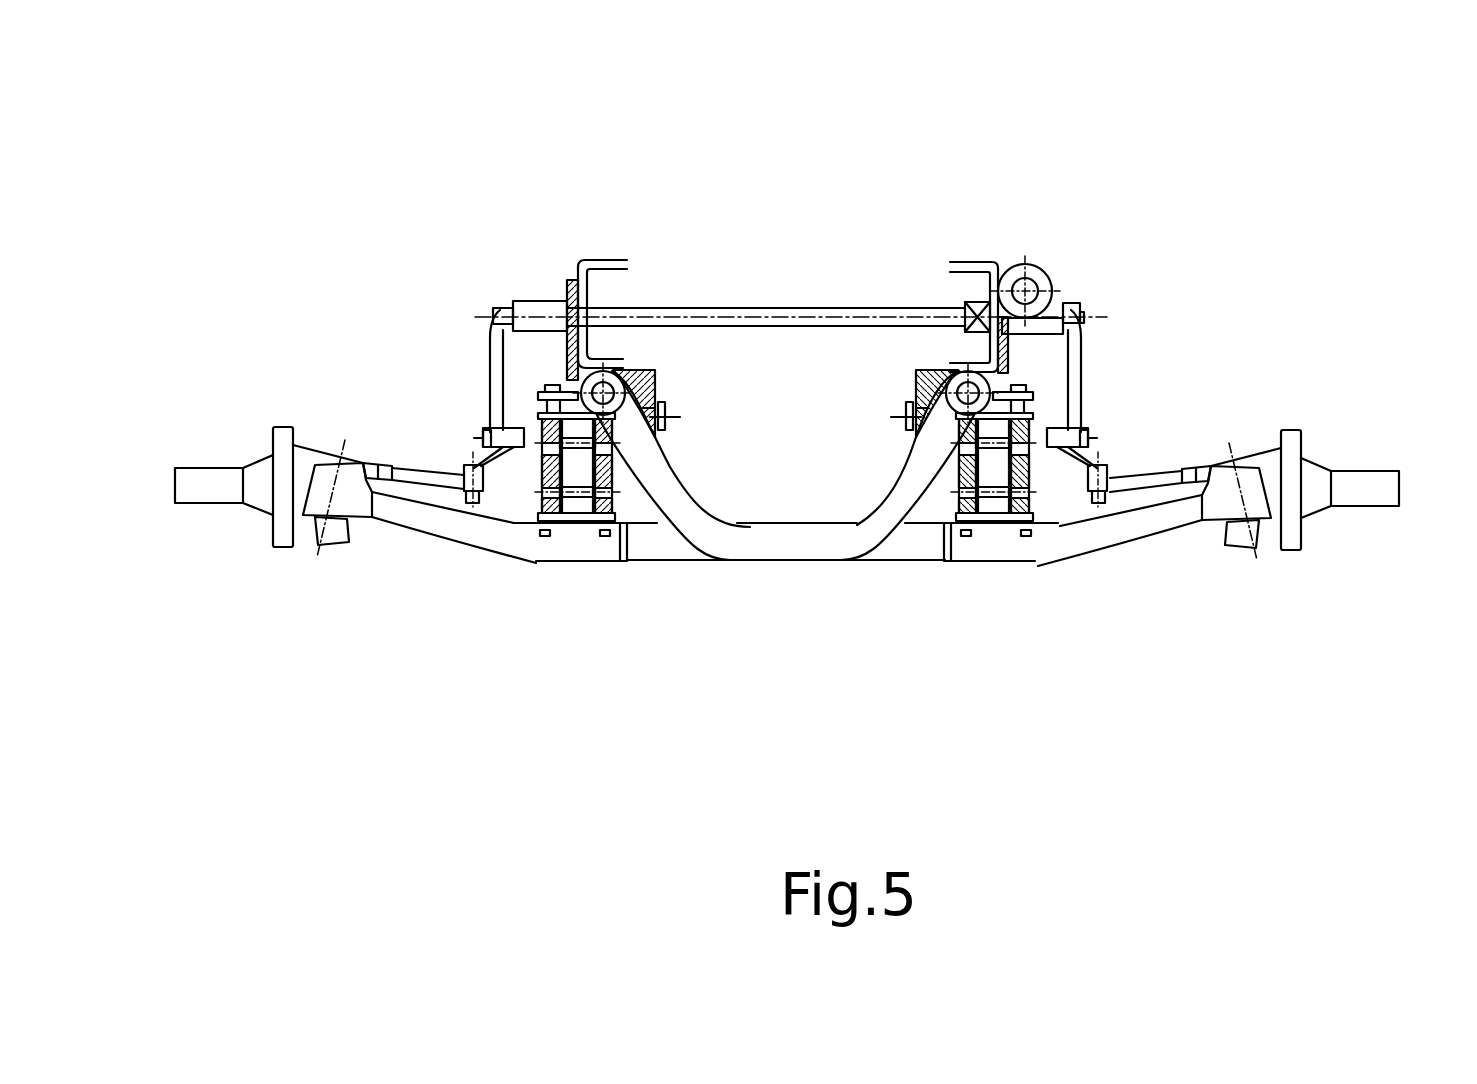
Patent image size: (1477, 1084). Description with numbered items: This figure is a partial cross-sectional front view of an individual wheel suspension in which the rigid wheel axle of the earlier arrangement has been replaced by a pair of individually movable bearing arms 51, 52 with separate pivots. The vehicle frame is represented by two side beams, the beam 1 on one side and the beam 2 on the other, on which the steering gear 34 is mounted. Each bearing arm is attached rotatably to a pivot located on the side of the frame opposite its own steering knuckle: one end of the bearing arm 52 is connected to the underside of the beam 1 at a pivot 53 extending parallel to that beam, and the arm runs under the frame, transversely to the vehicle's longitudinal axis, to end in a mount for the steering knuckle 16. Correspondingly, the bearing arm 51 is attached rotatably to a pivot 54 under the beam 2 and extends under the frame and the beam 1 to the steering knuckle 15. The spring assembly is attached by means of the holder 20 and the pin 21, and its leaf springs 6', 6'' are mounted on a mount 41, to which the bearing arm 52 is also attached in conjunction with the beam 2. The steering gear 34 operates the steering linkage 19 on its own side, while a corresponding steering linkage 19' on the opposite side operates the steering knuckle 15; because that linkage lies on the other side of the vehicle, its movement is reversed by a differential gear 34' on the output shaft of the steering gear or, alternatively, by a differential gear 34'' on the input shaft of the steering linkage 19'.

The beam 1 is at (590, 267).
The beam 2 is at (993, 287).
The leaf spring 6' is at (1106, 546).
The leaf spring 6'' is at (1089, 591).
The steering knuckle 15 is at (232, 480).
The steering knuckle 16 is at (1342, 483).
The steering linkage 19 is at (1279, 382).
The steering linkage 19' is at (320, 362).
The holder 20 is at (930, 368).
The pin 21 is at (902, 400).
The steering gear 34 is at (1098, 222).
The differential gear 34' is at (956, 205).
The differential gear 34'' is at (482, 237).
The mount 41 is at (1000, 527).
The bearing arm 51 is at (550, 552).
The bearing arm 52 is at (1022, 553).
The pivot 53 is at (617, 370).
The pivot 54 is at (980, 390).